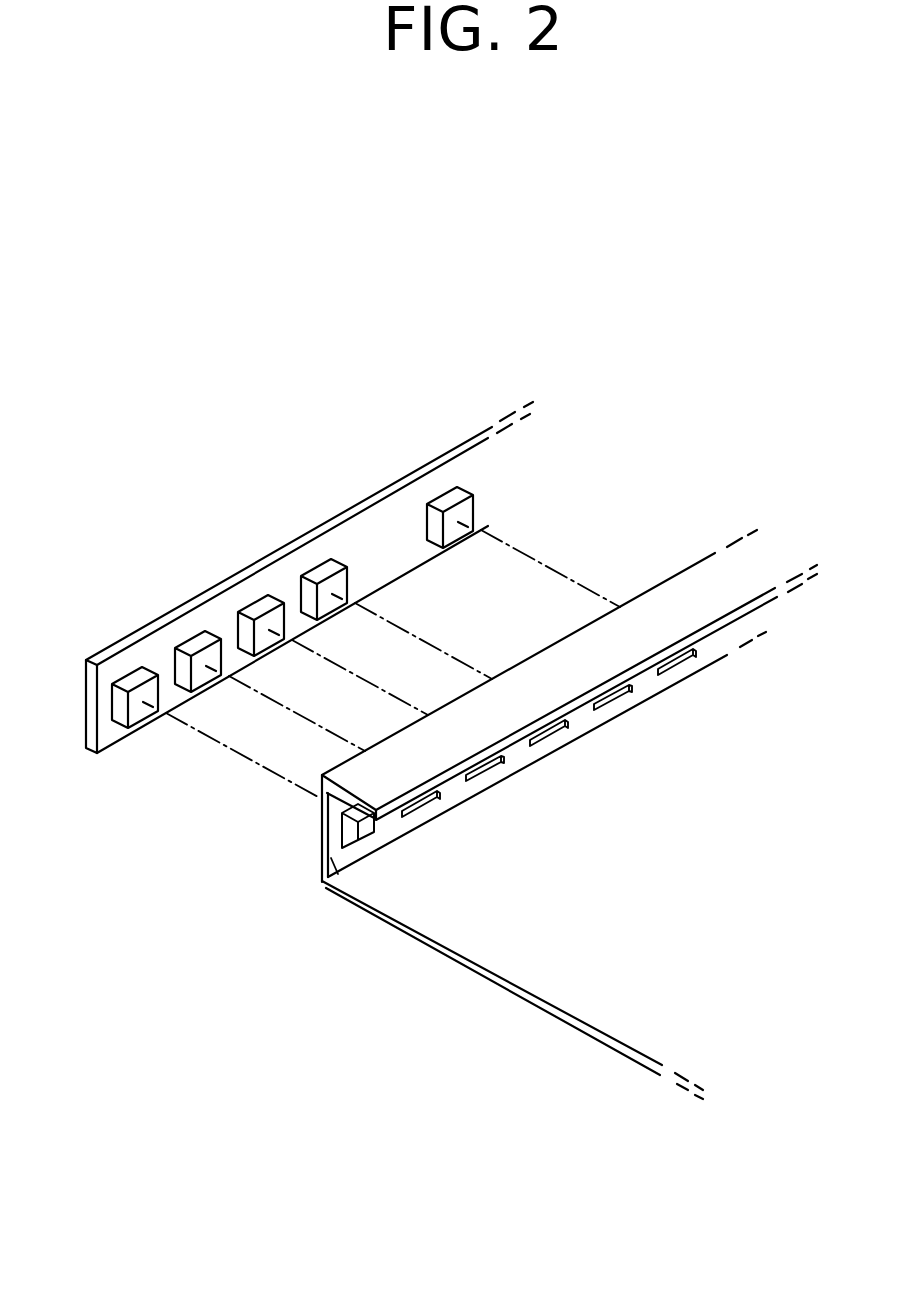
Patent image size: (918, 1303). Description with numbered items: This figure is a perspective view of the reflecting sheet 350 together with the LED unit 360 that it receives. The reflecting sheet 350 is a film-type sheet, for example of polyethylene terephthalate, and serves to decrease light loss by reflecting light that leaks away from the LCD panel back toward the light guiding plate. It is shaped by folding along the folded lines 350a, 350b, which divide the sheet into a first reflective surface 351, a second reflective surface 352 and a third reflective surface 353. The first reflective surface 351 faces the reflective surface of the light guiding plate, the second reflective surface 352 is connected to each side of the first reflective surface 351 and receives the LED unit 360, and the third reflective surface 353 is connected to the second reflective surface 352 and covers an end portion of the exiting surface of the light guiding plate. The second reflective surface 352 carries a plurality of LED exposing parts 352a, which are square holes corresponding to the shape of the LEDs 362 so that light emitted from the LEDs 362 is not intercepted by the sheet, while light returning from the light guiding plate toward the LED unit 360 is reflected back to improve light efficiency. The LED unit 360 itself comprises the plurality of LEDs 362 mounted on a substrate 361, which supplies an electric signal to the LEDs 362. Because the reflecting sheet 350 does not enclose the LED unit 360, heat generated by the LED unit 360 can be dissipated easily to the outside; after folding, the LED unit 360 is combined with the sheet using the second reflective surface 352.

The reflecting sheet 350 is at (774, 518).
The folded line 350a is at (658, 692).
The folded line 350b is at (634, 600).
The first reflective surface 351 is at (580, 1031).
The second reflective surface 352 is at (322, 882).
The LED exposing parts 352a is at (411, 796).
The third reflective surface 353 is at (322, 806).
The LED unit 360 is at (72, 533).
The substrate 361 is at (294, 548).
The LEDs 362 is at (188, 640).